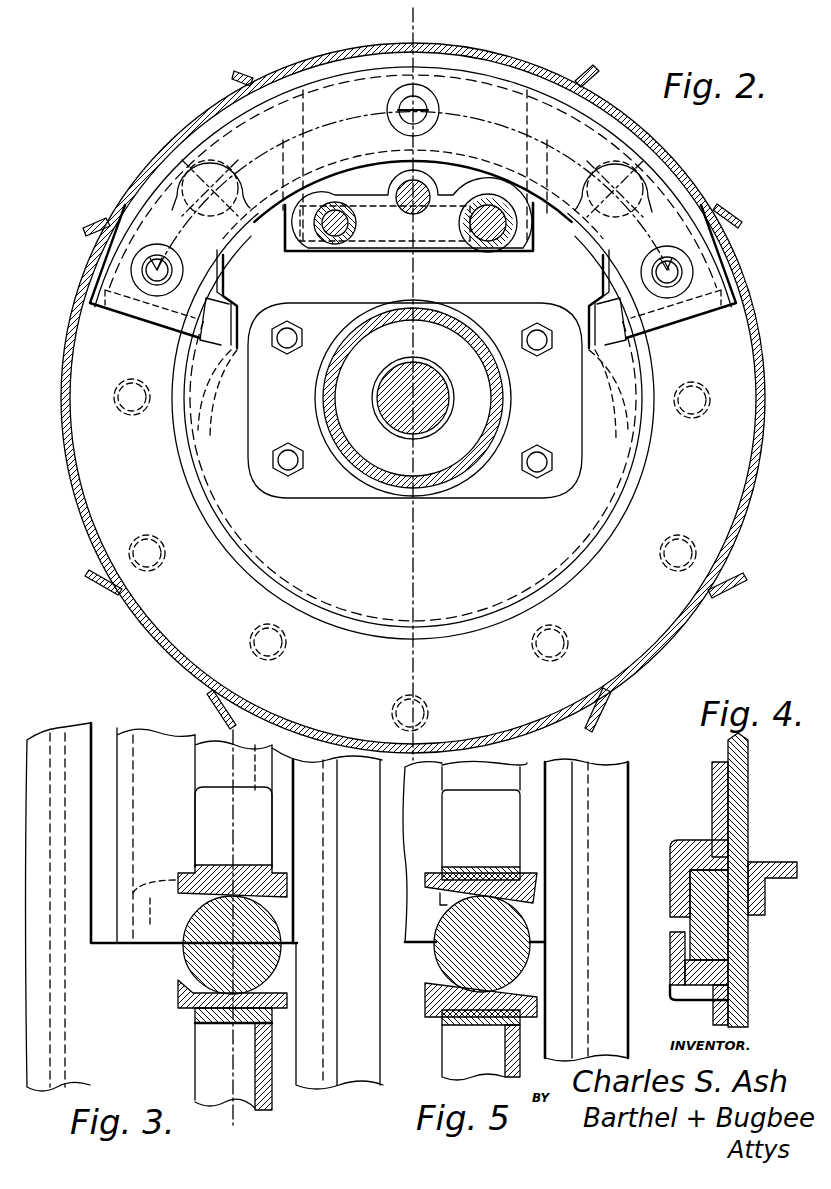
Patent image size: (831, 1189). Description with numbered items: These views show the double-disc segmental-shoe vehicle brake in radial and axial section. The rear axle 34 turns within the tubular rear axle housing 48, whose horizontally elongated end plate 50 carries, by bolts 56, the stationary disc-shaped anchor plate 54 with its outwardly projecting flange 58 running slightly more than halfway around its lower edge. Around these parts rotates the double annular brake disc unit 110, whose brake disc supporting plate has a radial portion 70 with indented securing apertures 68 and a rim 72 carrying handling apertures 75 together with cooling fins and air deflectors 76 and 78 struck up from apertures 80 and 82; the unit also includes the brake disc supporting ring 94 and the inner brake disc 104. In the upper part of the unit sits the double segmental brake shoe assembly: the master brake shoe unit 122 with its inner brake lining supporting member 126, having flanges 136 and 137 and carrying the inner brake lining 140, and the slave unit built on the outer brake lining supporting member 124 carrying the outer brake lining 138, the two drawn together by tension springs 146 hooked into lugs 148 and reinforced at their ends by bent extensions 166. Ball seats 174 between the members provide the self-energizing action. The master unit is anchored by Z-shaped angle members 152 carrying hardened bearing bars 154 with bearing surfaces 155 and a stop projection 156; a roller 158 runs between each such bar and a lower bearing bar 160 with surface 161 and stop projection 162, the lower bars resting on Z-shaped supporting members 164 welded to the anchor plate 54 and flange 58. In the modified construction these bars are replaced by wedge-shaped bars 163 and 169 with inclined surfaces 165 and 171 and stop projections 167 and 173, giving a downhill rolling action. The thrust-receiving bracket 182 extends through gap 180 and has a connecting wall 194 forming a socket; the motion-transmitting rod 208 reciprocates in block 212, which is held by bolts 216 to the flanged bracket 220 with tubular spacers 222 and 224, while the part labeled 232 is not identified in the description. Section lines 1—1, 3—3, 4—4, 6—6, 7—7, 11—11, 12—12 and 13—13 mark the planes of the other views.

In FIG. 2, the section line 1— 1 is at (413, 15).
In FIG. 2, the section line 3— 3 is at (590, 272).
In FIG. 3, the section line 4— 4 is at (272, 775).
In FIG. 2, the section line 6— 6 is at (290, 130).
In FIG. 2, the section line 7— 7 is at (274, 243).
In FIG. 2, the section line 11— 11 is at (247, 153).
In FIG. 2, the section line 12— 12 is at (248, 160).
In FIG. 2, the section line 13— 13 is at (262, 270).
In FIG. 2, the rear axle 34 is at (452, 398).
In FIG. 2, the rear axle housing 48 is at (430, 500).
In FIG. 2, the end plate 50 is at (480, 500).
In FIG. 2, the anchor plate 54 is at (568, 555).
In FIG. 3, the anchor plate 54 is at (273, 1105).
In FIG. 5, the anchor plate 54 is at (503, 1058).
In FIG. 4, the anchor plate 54 is at (752, 1012).
In FIG. 2, the bolts 56 is at (545, 468).
In FIG. 2, the flange 58 is at (495, 590).
In FIG. 2, the brake disc securing apertures 68 is at (588, 630).
In FIG. 3, the radial portion 70 is at (65, 745).
In FIG. 2, the rim 72 is at (666, 646).
In FIG. 2, the apertures 75 is at (384, 40).
In FIG. 2, the cooling fins and air deflectors 76 is at (234, 727).
In FIG. 2, the cooling fins and air deflectors 78 is at (592, 730).
In FIG. 2, the apertures 80 is at (725, 234).
In FIG. 2, the apertures 82 is at (585, 68).
In FIG. 3, the brake disc supporting ring 94 is at (360, 807).
In FIG. 5, the brake disc supporting ring 94 is at (628, 784).
In FIG. 5, the inner brake disc 104 is at (560, 775).
In FIG. 2, the double annular brake disc unit 110 is at (66, 324).
In FIG. 2, the master brake shoe unit 122 is at (690, 280).
In FIG. 3, the master brake shoe unit 122 is at (395, 810).
In FIG. 5, the master brake shoe unit 122 is at (430, 812).
In FIG. 3, the outer brake lining supporting member 124 is at (163, 745).
In FIG. 3, the inner brake lining supporting member 126 is at (245, 755).
In FIG. 5, the inner brake lining supporting member 126 is at (502, 770).
In FIG. 4, the inner brake lining supporting member 126 is at (750, 810).
In FIG. 2, the outer flange 136 is at (332, 105).
In FIG. 2, the inner flange 137 is at (385, 144).
In FIG. 3, the outer brake lining 138 is at (103, 935).
In FIG. 3, the inner brake lining 140 is at (280, 776).
In FIG. 2, the tension springs 146 is at (680, 258).
In FIG. 2, the struck-up lugs 148 is at (662, 255).
In FIG. 2, the Z-shaped angle members 152 is at (570, 340).
In FIG. 3, the Z-shaped angle members 152 is at (205, 815).
In FIG. 5, the Z-shaped angle members 152 is at (505, 815).
In FIG. 4, the Z-shaped angle members 152 is at (712, 785).
In FIG. 2, the bearing bars 154 is at (585, 300).
In FIG. 3, the bearing bars 154 is at (178, 880).
In FIG. 5, the bearing bars 154 is at (628, 860).
In FIG. 4, the bearing bars 154 is at (690, 862).
In FIG. 3, the bearing surfaces 155 is at (155, 902).
In FIG. 4, the bearing surfaces 155 is at (735, 852).
In FIG. 3, the stop projection 156 is at (288, 895).
In FIG. 2, the roller 158 is at (620, 345).
In FIG. 3, the roller 158 is at (190, 960).
In FIG. 5, the roller 158 is at (434, 963).
In FIG. 4, the roller 158 is at (728, 920).
In FIG. 2, the bearing bar 160 is at (622, 360).
In FIG. 3, the bearing bar 160 is at (195, 1012).
In FIG. 5, the bearing bar 160 is at (481, 1017).
In FIG. 4, the bearing bar 160 is at (728, 968).
In FIG. 3, the bearing surface 161 is at (280, 990).
In FIG. 4, the bearing surface 161 is at (672, 972).
In FIG. 3, the stop projection 162 is at (178, 983).
In FIG. 5, the stop projection 162 is at (481, 1000).
In FIG. 5, the wedge-shaped bearing bar 163 is at (428, 1018).
In FIG. 2, the Z-shaped supporting members 164 is at (590, 385).
In FIG. 3, the Z-shaped supporting members 164 is at (210, 1025).
In FIG. 4, the Z-shaped supporting members 164 is at (695, 1000).
In FIG. 5, the inclined surface 165 is at (533, 1000).
In FIG. 2, the extension 166 is at (695, 320).
In FIG. 4, the extension 166 is at (780, 878).
In FIG. 5, the stop projection 167 is at (424, 986).
In FIG. 5, the wedge-shaped bearing bar 169 is at (425, 875).
In FIG. 5, the inclined surface 171 is at (440, 900).
In FIG. 5, the stop projection 173 is at (535, 900).
In FIG. 2, the ball seats 174 is at (655, 190).
In FIG. 2, the gap 180 is at (475, 193).
In FIG. 2, the thrust-receiving bracket 182 is at (322, 146).
In FIG. 2, the connecting wall 194 is at (405, 242).
In FIG. 2, the motion-transmitting rod 208 is at (425, 180).
In FIG. 2, the block 212 is at (392, 253).
In FIG. 2, the bolts 216 is at (488, 242).
In FIG. 2, the flanged bracket 220 is at (508, 250).
In FIG. 2, the tubular spacer 222 is at (335, 245).
In FIG. 2, the tubular spacer 224 is at (484, 248).
In FIG. 2, the piston cup 232 is at (480, 240).